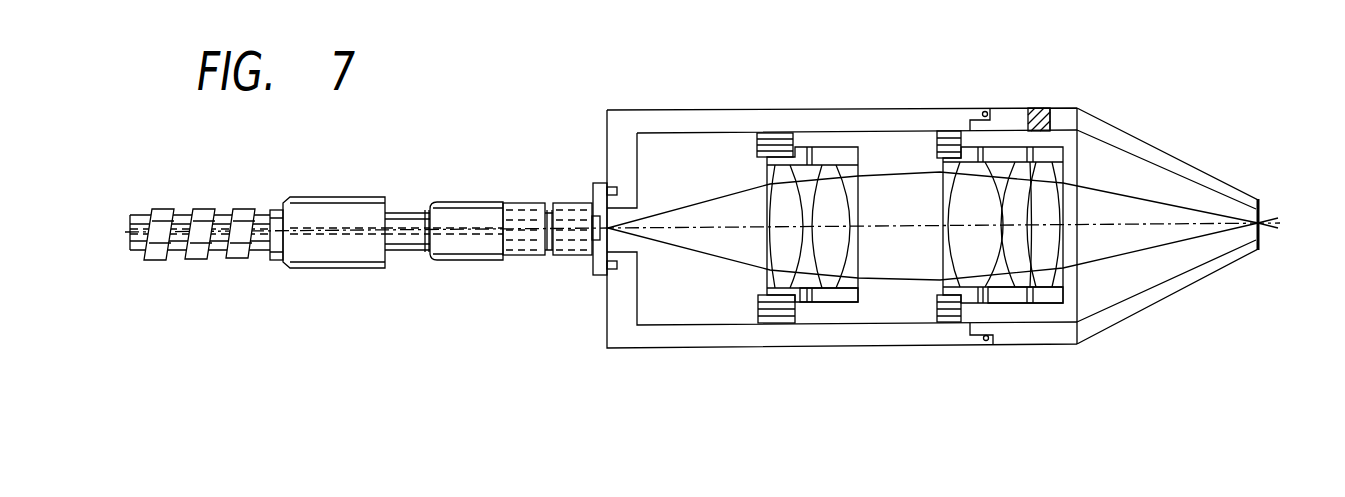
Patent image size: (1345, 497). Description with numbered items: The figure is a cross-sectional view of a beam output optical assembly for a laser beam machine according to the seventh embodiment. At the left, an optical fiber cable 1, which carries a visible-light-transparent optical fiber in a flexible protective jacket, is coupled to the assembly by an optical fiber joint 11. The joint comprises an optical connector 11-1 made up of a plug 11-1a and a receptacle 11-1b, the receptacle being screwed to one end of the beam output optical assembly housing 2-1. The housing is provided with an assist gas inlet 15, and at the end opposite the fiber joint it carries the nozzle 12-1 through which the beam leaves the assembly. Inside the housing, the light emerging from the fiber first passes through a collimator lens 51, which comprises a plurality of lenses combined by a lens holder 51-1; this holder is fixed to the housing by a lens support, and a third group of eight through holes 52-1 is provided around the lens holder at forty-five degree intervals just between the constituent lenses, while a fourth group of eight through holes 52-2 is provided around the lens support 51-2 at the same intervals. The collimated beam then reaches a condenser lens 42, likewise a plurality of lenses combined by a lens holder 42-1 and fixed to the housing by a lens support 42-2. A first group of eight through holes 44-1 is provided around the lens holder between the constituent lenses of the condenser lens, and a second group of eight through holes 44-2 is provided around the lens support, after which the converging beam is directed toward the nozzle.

The optical fiber cable 1 is at (227, 215).
The optical fiber joint 11 is at (435, 302).
The optical connector 11-1 is at (372, 260).
The plug 11-1a is at (480, 255).
The receptacle 11-1b is at (590, 262).
The beam output optical assembly housing 2-1 is at (607, 328).
The nozzle 12-1 is at (1132, 130).
The assist gas inlet 15 is at (1037, 107).
The collimator lens 51 is at (780, 198).
The lens holder 51-1 is at (832, 157).
The lens support 51-2 is at (775, 302).
The third group of through holes 52-1 is at (807, 302).
The lens support 52-2 is at (760, 313).
The condenser lens 42 is at (967, 158).
The lens holder 42-1 is at (1005, 153).
The lens support 42-2 is at (940, 302).
The first group of through holes 44-1 is at (1033, 303).
The second group of through holes 44-2 is at (973, 340).